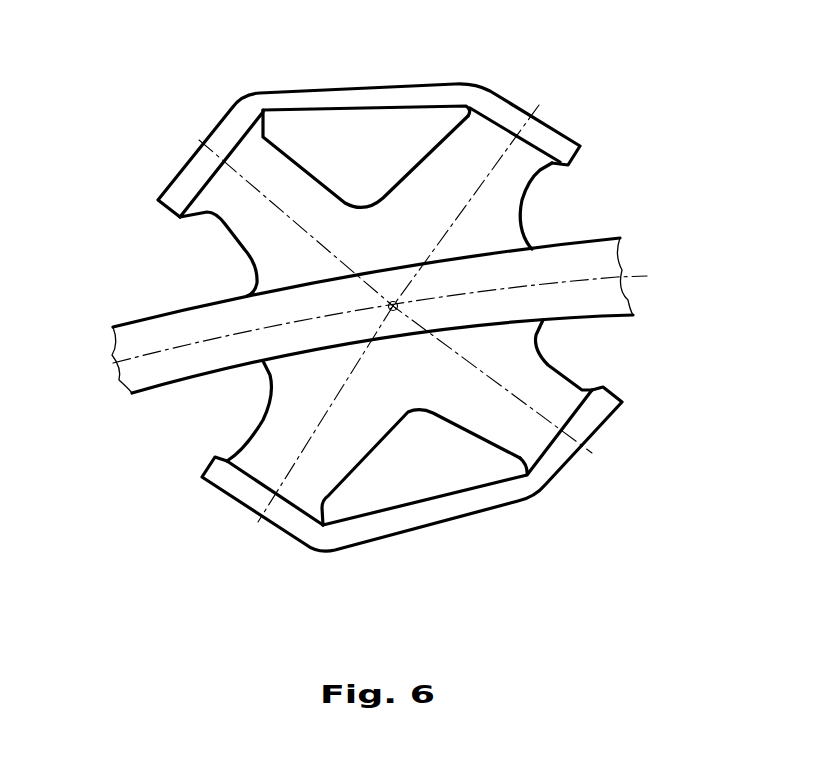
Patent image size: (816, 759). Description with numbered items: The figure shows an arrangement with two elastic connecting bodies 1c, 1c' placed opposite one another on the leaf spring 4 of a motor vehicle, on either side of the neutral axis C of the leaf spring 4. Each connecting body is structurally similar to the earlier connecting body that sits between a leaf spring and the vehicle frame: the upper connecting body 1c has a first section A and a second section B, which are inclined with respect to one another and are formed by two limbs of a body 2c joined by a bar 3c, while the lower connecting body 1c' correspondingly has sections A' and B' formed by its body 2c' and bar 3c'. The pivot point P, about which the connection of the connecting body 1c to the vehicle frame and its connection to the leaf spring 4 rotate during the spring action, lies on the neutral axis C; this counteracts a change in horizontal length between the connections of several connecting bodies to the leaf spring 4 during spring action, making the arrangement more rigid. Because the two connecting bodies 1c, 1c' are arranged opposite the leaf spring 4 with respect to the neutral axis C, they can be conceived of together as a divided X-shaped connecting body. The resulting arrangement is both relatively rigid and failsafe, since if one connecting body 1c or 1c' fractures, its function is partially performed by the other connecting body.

The elastic connecting body 1c is at (364, 147).
The upper cross bar 3c is at (411, 99).
The upper opening 2c is at (365, 163).
The first section A is at (217, 254).
The second section B is at (551, 206).
The leaf spring 4 is at (153, 332).
The neutral axis C is at (637, 272).
The pivot point P is at (395, 313).
The elastic connecting body 1c' is at (386, 469).
The lower cross bar 3c' is at (457, 470).
The lower opening 2c' is at (421, 464).
The contact region A' is at (229, 411).
The contact region B' is at (576, 355).